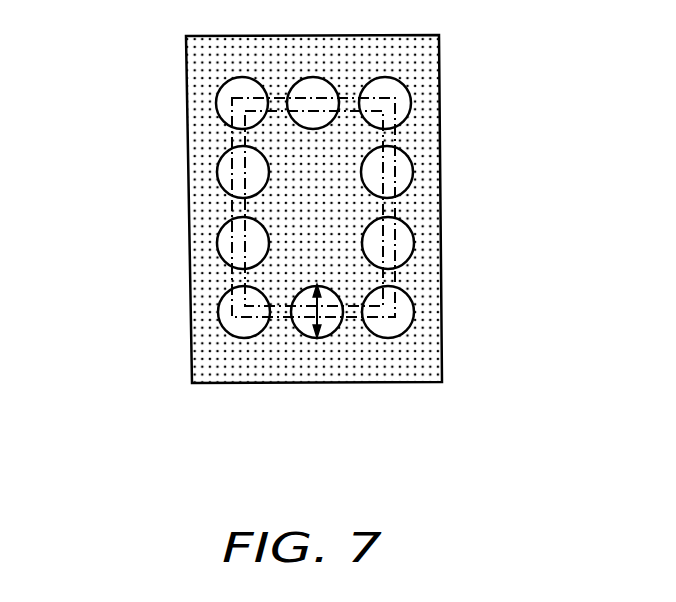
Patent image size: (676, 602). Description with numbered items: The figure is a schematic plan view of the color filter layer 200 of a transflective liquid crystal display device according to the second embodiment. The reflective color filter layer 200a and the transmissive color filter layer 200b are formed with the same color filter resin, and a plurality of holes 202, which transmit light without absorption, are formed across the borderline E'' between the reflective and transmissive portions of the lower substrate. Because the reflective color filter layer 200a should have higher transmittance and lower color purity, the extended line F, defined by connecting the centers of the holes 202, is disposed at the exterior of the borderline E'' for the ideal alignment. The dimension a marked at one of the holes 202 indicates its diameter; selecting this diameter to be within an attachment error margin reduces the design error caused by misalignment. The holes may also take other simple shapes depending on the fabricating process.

The color filter layer 200 is at (255, 225).
The reflective color filter layer 200a is at (204, 207).
The transmissive color filter layer 200b is at (258, 272).
The holes 202 is at (222, 316).
The borderline E'' is at (257, 211).
The extended line F is at (394, 108).
The gap distance a is at (320, 314).